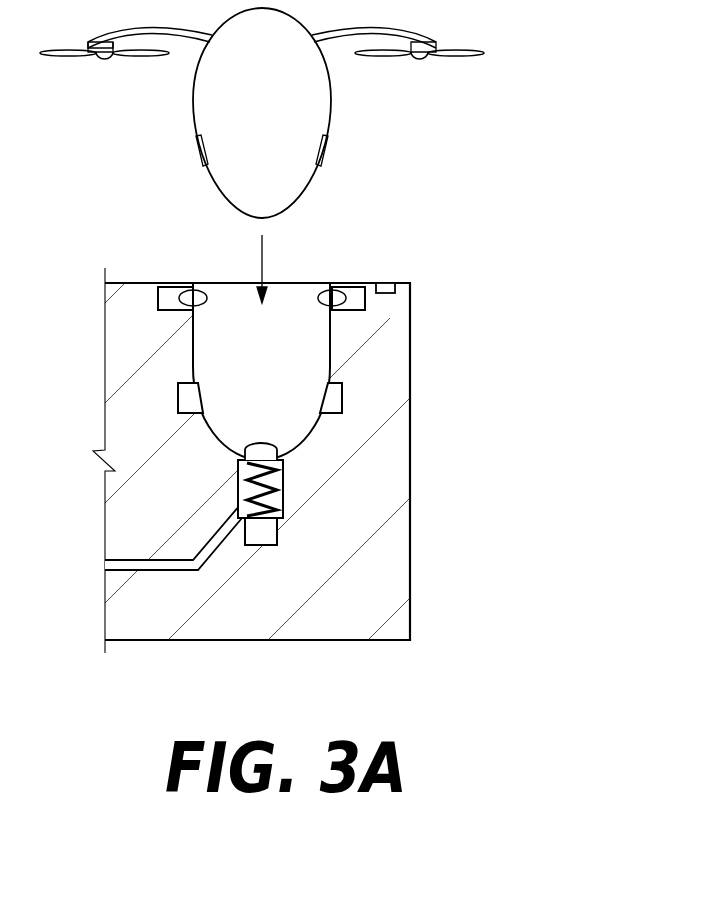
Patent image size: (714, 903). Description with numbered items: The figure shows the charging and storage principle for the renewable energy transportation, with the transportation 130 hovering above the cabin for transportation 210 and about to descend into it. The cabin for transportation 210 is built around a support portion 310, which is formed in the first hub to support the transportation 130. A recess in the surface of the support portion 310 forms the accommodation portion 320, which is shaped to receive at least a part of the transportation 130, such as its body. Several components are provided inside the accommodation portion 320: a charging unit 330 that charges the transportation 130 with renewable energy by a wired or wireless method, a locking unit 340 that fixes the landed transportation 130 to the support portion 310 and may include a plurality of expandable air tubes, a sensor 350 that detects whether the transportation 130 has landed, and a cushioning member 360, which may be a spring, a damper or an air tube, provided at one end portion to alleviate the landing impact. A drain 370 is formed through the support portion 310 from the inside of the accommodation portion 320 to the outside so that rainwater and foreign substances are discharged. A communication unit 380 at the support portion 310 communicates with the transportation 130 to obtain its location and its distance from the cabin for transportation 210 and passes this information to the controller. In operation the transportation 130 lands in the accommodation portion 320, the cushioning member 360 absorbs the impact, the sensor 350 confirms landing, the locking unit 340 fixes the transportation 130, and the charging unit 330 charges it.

The transportation 130 is at (352, 122).
The cabin for transportation 210 is at (357, 535).
The support portion 310 is at (402, 613).
The accommodation portion 320 is at (320, 353).
The charging unit 330 is at (335, 404).
The locking unit 340 is at (363, 307).
The sensor 350 is at (270, 535).
The cushioning member 360 is at (358, 479).
The drain 370 is at (210, 553).
The communication unit 380 is at (385, 283).